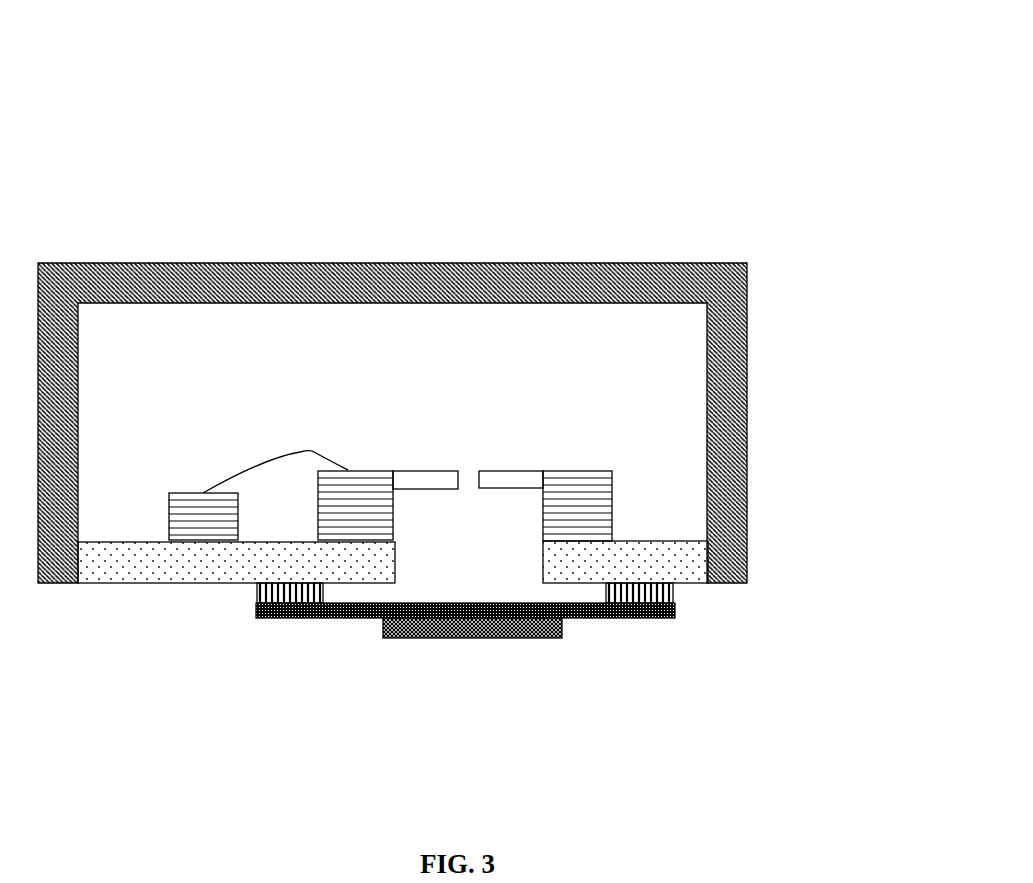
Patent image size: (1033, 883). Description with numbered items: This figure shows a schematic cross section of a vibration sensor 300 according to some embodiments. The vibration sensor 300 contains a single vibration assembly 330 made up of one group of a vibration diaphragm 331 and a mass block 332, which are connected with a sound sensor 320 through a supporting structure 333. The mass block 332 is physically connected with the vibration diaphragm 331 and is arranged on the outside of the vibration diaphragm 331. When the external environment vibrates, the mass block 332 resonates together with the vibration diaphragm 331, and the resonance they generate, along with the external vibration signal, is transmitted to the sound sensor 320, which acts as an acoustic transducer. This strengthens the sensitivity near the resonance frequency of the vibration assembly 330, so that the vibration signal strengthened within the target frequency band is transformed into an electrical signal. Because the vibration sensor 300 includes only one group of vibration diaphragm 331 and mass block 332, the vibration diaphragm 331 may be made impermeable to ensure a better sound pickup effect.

The vibration sensor 300 is at (102, 56).
The sound sensor 320 is at (606, 257).
The vibration assembly 330 is at (510, 639).
The vibration diaphragm 331 is at (675, 611).
The mass block 332 is at (563, 629).
The supporting structure 333 is at (258, 596).